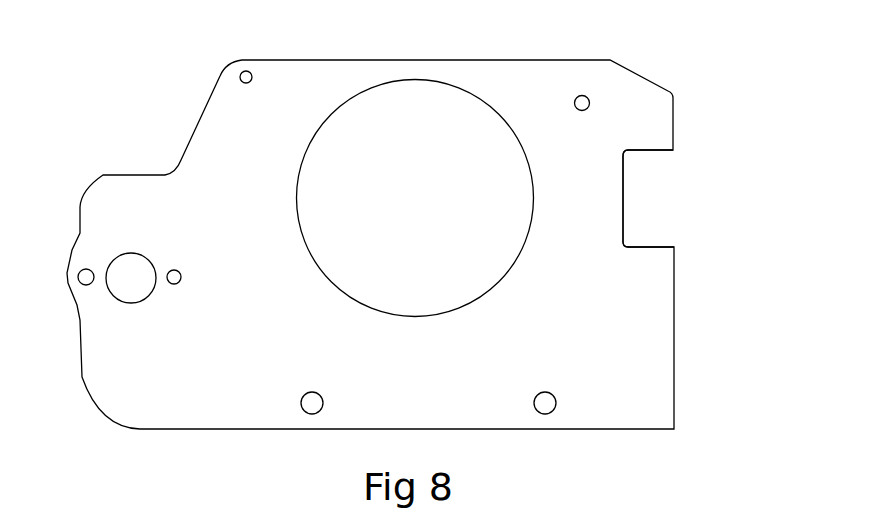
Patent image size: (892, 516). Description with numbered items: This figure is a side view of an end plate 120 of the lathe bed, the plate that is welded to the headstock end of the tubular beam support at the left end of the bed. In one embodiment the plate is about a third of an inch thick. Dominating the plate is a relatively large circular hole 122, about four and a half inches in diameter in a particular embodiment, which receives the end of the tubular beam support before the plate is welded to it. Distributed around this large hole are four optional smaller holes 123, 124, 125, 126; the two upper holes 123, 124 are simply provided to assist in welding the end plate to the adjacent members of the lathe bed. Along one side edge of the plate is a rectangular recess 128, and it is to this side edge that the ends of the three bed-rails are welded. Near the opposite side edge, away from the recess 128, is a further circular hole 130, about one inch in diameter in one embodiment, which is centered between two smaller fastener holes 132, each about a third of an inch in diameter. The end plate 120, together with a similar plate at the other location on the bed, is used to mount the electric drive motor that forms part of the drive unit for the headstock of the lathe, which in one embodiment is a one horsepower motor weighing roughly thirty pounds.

The end plate 120 is at (172, 120).
The circular hole 122 is at (460, 253).
The upper hole 123 is at (253, 72).
The upper hole 124 is at (577, 97).
The smaller hole 125 is at (323, 399).
The smaller hole 126 is at (553, 392).
The rectangular recess 128 is at (653, 198).
The circular hole 130 is at (152, 257).
The fastener holes 132 is at (181, 275).